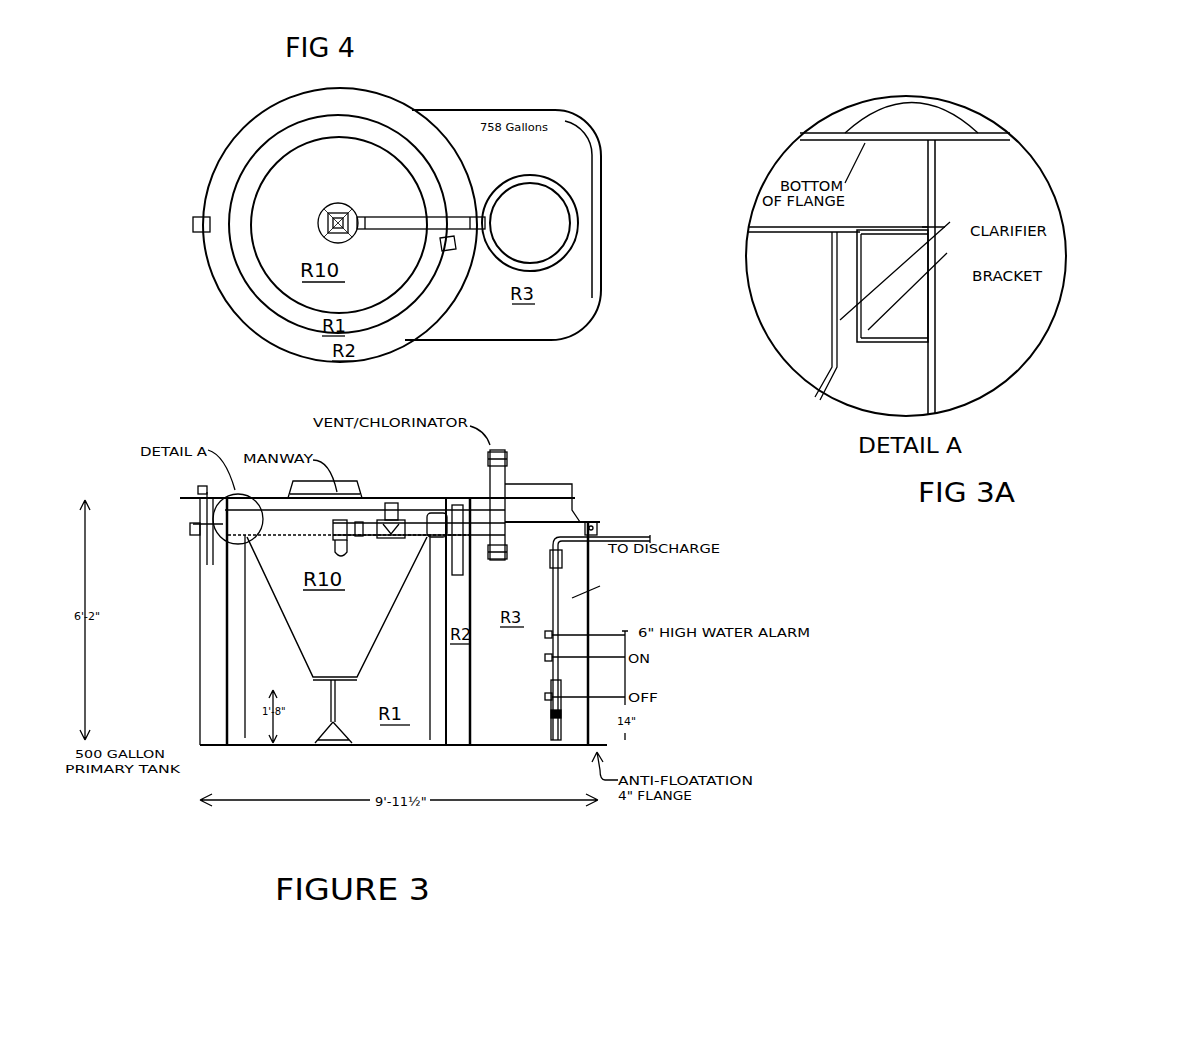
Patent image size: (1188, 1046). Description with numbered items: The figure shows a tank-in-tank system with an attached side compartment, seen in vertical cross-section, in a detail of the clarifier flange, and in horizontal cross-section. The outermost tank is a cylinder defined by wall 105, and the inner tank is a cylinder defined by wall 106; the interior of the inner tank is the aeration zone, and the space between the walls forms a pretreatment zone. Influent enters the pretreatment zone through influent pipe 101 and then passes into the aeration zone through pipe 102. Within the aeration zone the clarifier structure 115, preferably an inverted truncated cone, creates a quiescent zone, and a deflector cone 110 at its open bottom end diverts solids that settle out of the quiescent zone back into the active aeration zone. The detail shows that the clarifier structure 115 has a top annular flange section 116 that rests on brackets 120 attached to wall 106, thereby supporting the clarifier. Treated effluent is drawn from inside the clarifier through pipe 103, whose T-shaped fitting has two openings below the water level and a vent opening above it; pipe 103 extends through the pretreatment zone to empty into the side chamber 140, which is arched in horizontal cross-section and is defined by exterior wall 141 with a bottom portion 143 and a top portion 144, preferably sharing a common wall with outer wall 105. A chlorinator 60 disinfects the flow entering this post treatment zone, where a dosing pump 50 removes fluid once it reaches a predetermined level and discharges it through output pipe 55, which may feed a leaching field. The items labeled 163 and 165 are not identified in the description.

In FIG. 3, the dosing pump 50 is at (556, 692).
In FIG. 3, the output pipe 55 is at (652, 538).
In FIG. 3, the chlorinator 60 is at (500, 450).
In FIG. 4, the influent pipe 101 is at (185, 226).
In FIG. 3, the influent pipe 101 is at (190, 505).
In FIG. 4, the pipe 102 is at (448, 250).
In FIG. 3, the pipe 102 is at (456, 505).
In FIG. 3, the pipe 103 is at (365, 525).
In FIG. 4, the wall 105 is at (232, 310).
In FIG. 3, the wall 105 is at (200, 681).
In FIG. 4, the wall 106 is at (248, 148).
In FIG. 3A, the wall 106 is at (898, 345).
In FIG. 3, the wall 106 is at (200, 617).
In FIG. 3, the deflector cone 110 is at (358, 740).
In FIG. 4, the clarifier structure 115 is at (333, 137).
In FIG. 3A, the clarifier structure 115 is at (1066, 238).
In FIG. 3, the clarifier structure 115 is at (393, 600).
In FIG. 3A, the top annular flange section 116 is at (875, 226).
In FIG. 3A, the brackets 120 is at (933, 362).
In FIG. 4, the side chamber 140 is at (540, 305).
In FIG. 3, the side chamber 140 is at (580, 490).
In FIG. 3, the exterior wall 141 is at (588, 570).
In FIG. 3, the bottom portion 143 is at (523, 748).
In FIG. 3, the top portion 144 is at (592, 520).
In FIG. 4, the pump access riser 163 is at (551, 184).
In FIG. 3, the access lid 165 is at (335, 497).